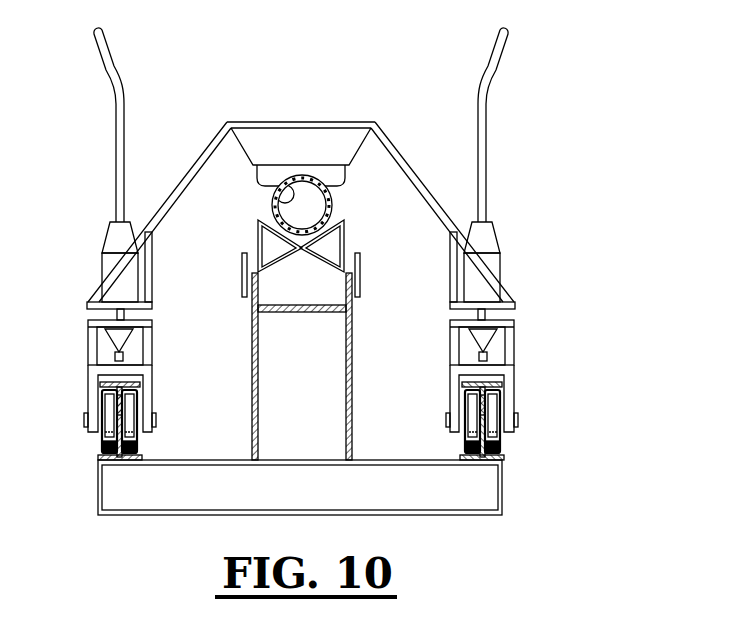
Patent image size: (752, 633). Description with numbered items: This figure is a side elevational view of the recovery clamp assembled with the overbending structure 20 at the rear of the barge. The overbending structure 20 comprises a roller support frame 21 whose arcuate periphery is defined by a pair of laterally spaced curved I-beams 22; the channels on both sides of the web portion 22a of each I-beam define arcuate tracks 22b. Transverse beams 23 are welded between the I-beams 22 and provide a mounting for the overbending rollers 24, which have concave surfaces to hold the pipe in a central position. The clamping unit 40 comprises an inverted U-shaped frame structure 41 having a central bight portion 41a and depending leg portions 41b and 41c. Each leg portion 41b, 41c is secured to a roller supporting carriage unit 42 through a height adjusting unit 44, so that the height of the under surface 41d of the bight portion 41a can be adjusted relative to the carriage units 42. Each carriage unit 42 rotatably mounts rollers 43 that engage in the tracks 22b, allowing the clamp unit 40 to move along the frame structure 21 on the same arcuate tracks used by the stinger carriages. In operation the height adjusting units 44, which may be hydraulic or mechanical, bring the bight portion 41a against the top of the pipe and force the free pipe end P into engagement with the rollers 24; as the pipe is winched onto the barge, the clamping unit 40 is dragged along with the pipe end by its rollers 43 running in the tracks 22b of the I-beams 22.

The clamping unit 40 is at (263, 95).
The inverted U-shaped frame structure 41 is at (430, 182).
The central bight portion 41a is at (302, 121).
The leg portion 41b is at (190, 257).
The leg portion 41c is at (407, 247).
The under surface of the bight portion 41d is at (280, 205).
The free pipe end P is at (332, 210).
The overbending rollers 24 is at (323, 268).
The overbending structure 20 is at (237, 361).
The roller support frame 21 is at (352, 336).
The curved beams 22 is at (115, 383).
The web portion 22a is at (117, 407).
The arcuate tracks 22b is at (102, 457).
The transverse beams 23 is at (316, 495).
The roller supporting carriage units 42 is at (152, 380).
The rollers 43 is at (102, 438).
The height adjusting unit 44 is at (108, 237).